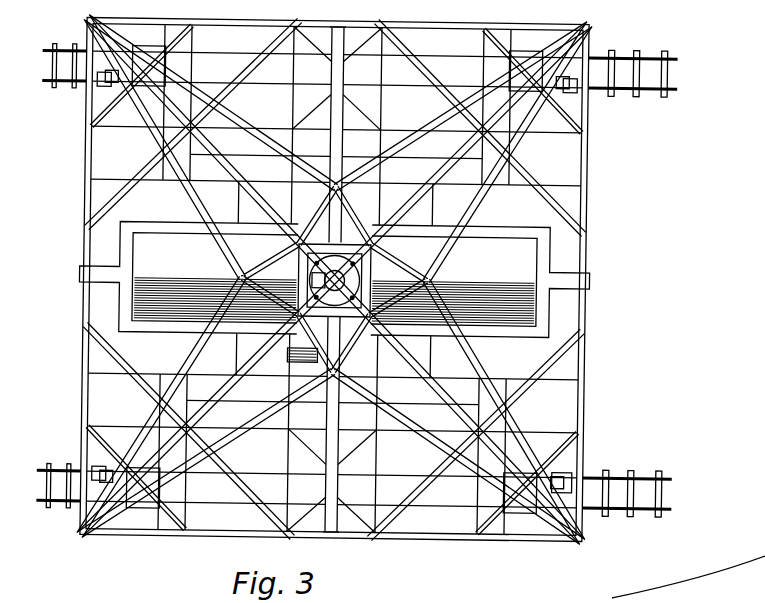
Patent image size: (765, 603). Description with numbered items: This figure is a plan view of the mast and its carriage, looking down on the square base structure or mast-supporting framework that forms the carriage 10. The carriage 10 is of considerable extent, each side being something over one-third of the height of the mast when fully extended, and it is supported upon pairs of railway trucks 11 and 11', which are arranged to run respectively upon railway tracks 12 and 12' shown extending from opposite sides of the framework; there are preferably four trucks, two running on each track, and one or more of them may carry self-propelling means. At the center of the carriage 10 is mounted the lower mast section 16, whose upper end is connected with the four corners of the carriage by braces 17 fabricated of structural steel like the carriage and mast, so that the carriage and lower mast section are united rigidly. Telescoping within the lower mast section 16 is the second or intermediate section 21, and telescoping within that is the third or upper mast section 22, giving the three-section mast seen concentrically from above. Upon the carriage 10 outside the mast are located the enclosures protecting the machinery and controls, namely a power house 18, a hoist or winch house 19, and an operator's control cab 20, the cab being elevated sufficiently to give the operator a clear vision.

The carriage 10 is at (437, 543).
The railway trucks 11 is at (360, 499).
The railway trucks 11' is at (336, 108).
The railway track 12 is at (358, 483).
The railway track 12' is at (367, 84).
The lower mast section 16 is at (380, 258).
The braces 17 is at (235, 163).
The power house 18 is at (152, 313).
The hoist or winch house 19 is at (508, 252).
The operator's control cab 20 is at (300, 360).
The intermediate mast section 21 is at (318, 320).
The upper mast section 22 is at (304, 259).